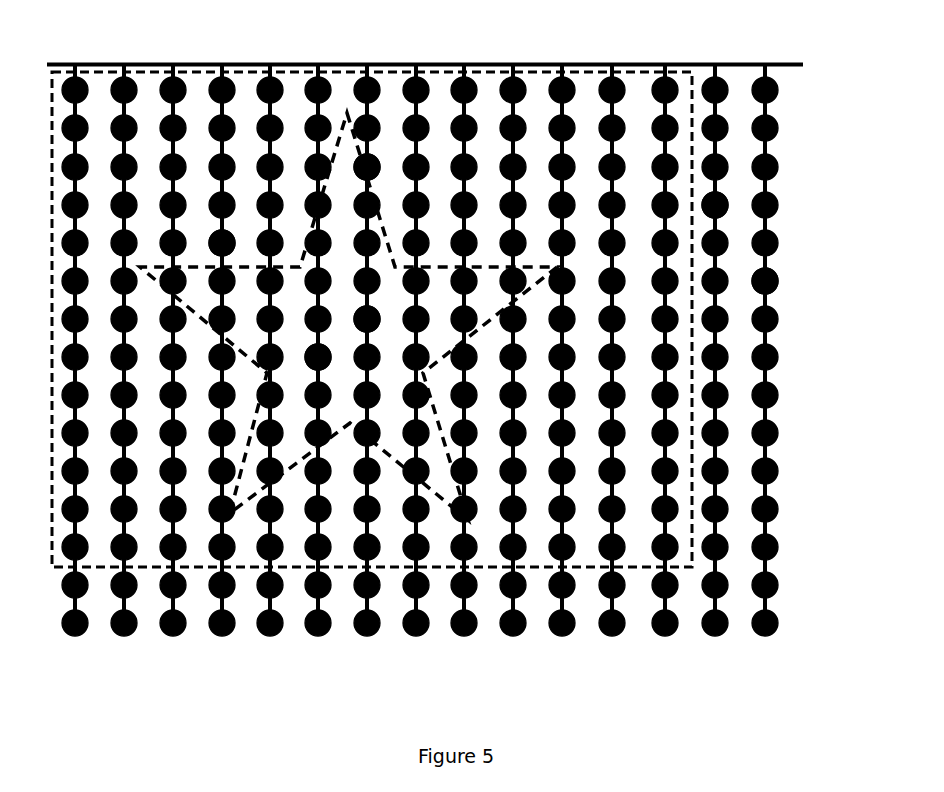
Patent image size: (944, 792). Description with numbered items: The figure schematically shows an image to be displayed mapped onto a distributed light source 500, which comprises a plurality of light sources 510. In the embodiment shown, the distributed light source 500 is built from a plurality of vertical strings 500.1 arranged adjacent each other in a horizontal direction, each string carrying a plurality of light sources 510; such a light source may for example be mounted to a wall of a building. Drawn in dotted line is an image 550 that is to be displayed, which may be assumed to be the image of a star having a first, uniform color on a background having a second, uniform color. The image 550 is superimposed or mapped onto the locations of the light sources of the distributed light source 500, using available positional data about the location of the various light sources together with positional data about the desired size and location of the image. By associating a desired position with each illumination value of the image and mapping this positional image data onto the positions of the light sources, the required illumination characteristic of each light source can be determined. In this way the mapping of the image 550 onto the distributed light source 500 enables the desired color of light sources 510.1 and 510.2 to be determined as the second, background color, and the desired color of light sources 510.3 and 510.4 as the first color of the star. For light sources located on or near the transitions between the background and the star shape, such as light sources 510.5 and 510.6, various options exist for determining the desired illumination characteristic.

The distributed light source 500 is at (449, 364).
The vertical strings 500.1 is at (773, 635).
The light sources 510 is at (728, 201).
The light source 510.1 is at (82, 462).
The light source 510.2 is at (398, 515).
The light source 510.3 is at (378, 320).
The light source 510.4 is at (328, 363).
The light source 510.5 is at (218, 240).
The light source 510.6 is at (382, 167).
The image 550 is at (340, 130).